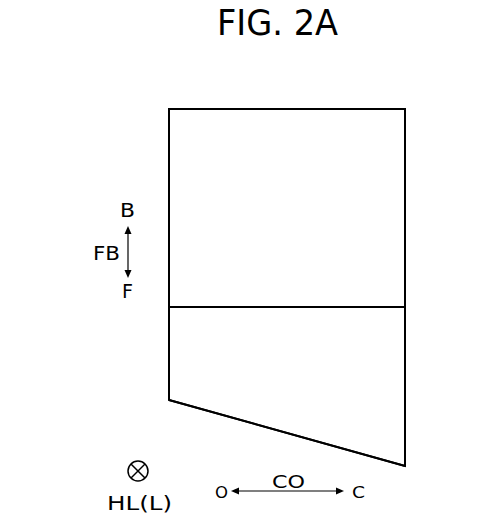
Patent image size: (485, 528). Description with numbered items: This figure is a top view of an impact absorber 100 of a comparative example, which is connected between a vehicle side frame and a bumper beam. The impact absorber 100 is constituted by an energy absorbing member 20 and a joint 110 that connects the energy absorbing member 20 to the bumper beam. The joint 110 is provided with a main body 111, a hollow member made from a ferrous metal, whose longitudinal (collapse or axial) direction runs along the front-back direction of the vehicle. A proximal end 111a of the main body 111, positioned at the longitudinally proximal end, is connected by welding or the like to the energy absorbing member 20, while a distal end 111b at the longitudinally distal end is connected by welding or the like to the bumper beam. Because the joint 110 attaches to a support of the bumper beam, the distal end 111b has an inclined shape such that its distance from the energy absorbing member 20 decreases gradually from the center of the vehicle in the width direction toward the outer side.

The impact absorber 100 is at (153, 96).
The energy absorbing member 20 is at (302, 218).
The joint 110 is at (83, 318).
The main body 111 is at (169, 373).
The proximal end 111a is at (220, 307).
The distal end 111b is at (230, 417).